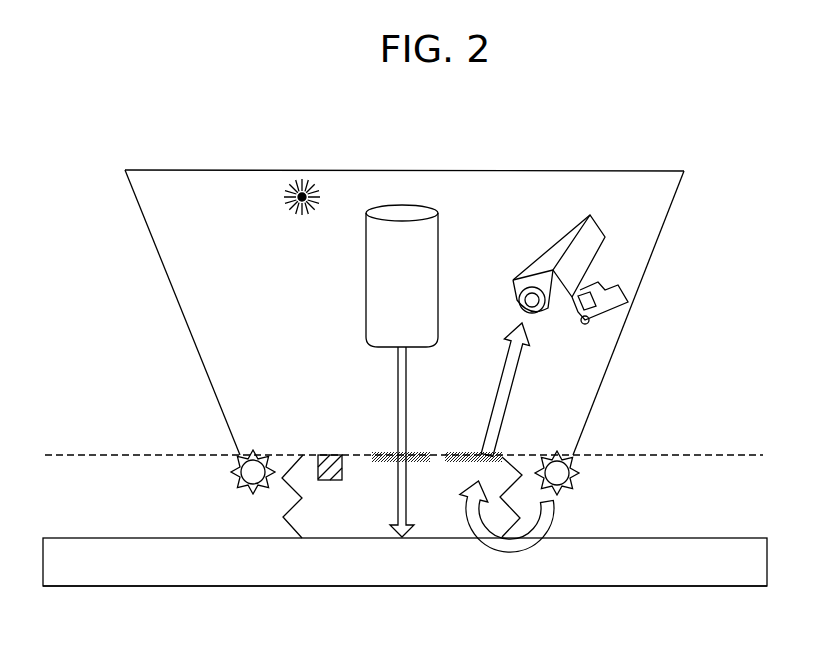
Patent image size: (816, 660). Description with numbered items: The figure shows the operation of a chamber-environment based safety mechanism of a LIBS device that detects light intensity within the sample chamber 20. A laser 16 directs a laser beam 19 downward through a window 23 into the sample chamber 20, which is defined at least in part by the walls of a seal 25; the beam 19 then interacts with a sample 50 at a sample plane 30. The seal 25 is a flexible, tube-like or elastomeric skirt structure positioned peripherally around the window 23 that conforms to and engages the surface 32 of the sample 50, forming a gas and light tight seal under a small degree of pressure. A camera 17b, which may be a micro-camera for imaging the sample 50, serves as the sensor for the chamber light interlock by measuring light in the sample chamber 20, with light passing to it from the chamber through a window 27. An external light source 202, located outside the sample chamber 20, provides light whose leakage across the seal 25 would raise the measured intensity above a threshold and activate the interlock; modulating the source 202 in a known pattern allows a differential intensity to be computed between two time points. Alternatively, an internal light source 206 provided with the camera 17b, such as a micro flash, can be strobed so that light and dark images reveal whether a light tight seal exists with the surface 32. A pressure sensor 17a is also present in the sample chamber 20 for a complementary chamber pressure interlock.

The laser 16 is at (436, 207).
The pressure sensor 17a is at (338, 453).
The camera 17b is at (594, 214).
The laser beam 19 is at (396, 375).
The sample chamber 20 is at (367, 495).
The window 23 is at (428, 451).
The seal 25 is at (282, 518).
The window 27 is at (498, 455).
The sample plane 30 is at (697, 453).
The surface 32 is at (717, 538).
The sample 50 is at (405, 587).
The external light source 202 is at (581, 473).
The light source 206 is at (302, 178).